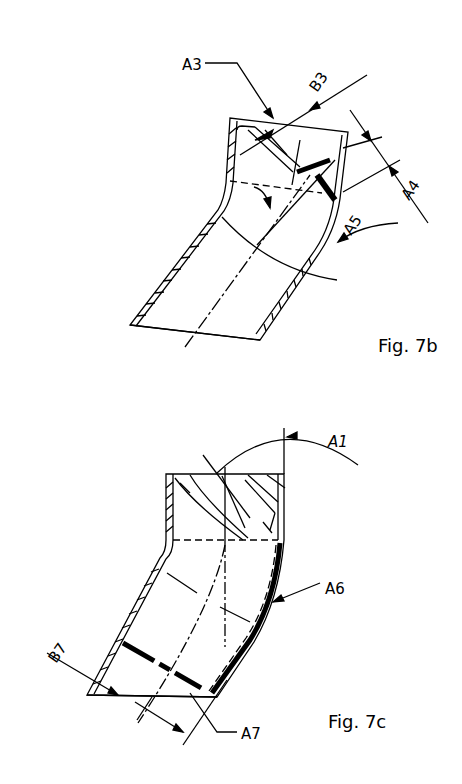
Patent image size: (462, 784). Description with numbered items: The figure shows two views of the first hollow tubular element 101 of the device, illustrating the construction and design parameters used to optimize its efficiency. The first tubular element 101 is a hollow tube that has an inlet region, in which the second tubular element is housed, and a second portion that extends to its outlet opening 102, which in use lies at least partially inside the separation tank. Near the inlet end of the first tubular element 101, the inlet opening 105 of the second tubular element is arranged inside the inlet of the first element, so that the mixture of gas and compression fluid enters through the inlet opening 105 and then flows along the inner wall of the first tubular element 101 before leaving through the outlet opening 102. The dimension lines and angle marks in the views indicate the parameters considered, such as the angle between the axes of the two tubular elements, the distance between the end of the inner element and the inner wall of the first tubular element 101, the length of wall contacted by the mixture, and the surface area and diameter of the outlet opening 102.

In FIG. 7B, the first hollow tubular element 101 is at (160, 255).
In FIG. 7C, the first hollow tubular element 101 is at (185, 575).
In FIG. 7B, the outlet opening 102 is at (175, 333).
In FIG. 7C, the outlet opening 102 is at (135, 698).
In FIG. 7B, the inlet opening 105 is at (283, 127).
In FIG. 7C, the inlet opening 105 is at (228, 468).